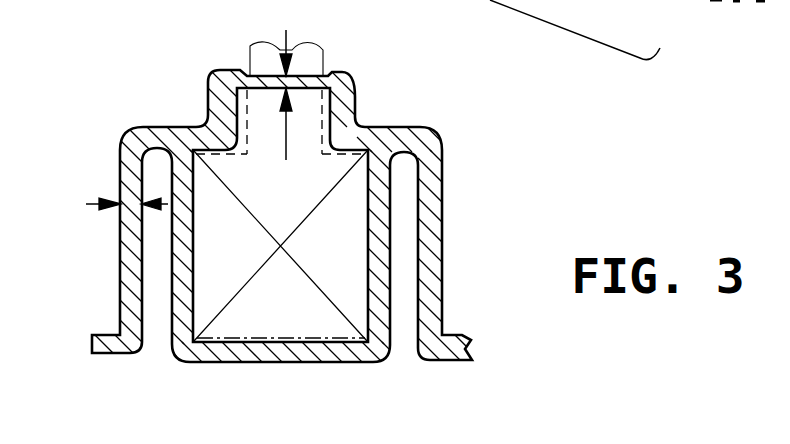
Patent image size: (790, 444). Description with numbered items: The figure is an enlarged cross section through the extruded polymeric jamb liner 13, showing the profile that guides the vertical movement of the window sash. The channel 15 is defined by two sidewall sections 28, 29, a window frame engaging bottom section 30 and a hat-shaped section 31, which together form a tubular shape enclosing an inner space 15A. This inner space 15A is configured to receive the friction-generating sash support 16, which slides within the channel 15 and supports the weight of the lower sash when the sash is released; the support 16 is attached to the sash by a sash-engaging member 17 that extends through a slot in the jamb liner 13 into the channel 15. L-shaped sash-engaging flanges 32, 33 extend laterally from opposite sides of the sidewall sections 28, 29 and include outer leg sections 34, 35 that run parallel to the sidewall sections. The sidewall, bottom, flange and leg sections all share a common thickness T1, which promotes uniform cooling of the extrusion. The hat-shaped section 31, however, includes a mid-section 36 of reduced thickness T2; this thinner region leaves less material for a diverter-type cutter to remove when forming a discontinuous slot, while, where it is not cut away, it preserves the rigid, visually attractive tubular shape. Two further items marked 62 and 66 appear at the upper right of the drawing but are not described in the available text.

The jamb liner 13 is at (421, 88).
The channel 15 is at (193, 304).
The inner space 15A is at (340, 350).
The friction-generating sash support 16 is at (277, 322).
The sash-engaging member 17 is at (326, 60).
The sidewall section 28 is at (183, 228).
The sidewall section 29 is at (377, 220).
The window frame engaging bottom section 30 is at (222, 362).
The hat-shaped section 31 is at (197, 133).
The L-shaped sash-engaging flange 32 is at (127, 132).
The L-shaped sash-engaging flange 33 is at (437, 137).
The outer leg section 34 is at (120, 272).
The outer leg section 35 is at (443, 252).
The mid-section 36 is at (247, 74).
The mating member 62 is at (575, 66).
The mating member edge 66 is at (578, 11).
The common thickness T1 is at (108, 206).
The reduced thickness T2 is at (289, 118).